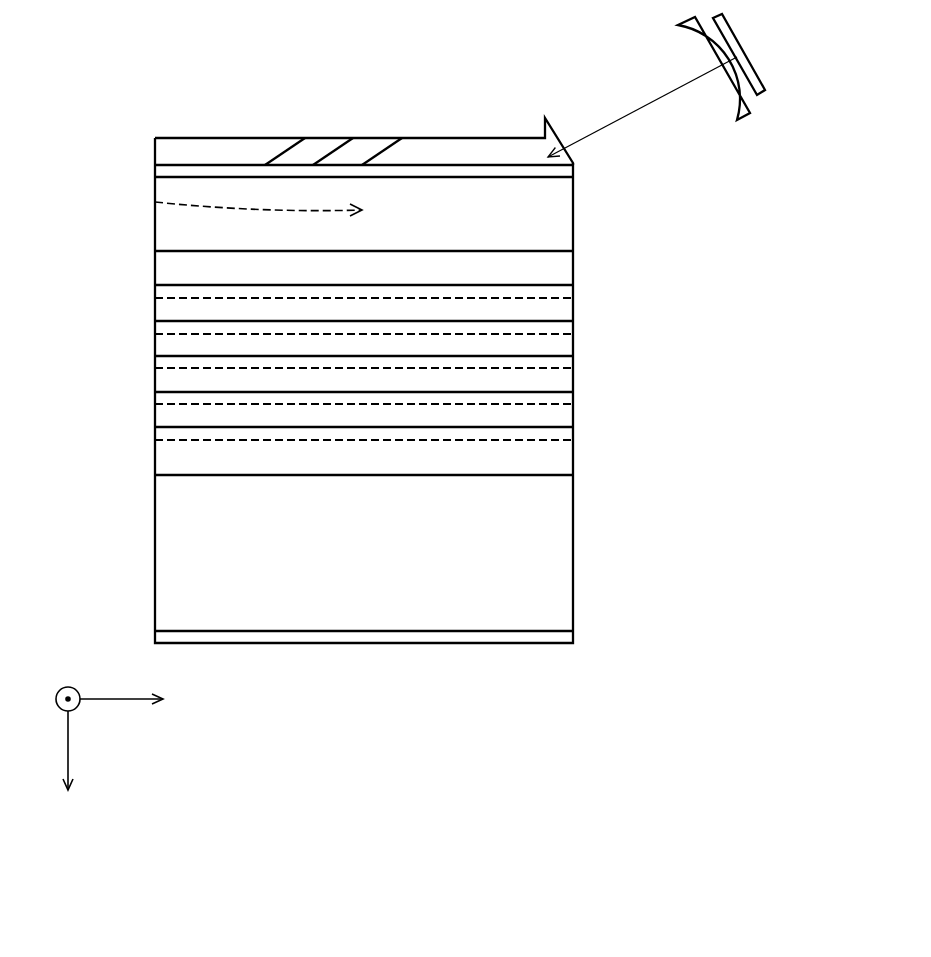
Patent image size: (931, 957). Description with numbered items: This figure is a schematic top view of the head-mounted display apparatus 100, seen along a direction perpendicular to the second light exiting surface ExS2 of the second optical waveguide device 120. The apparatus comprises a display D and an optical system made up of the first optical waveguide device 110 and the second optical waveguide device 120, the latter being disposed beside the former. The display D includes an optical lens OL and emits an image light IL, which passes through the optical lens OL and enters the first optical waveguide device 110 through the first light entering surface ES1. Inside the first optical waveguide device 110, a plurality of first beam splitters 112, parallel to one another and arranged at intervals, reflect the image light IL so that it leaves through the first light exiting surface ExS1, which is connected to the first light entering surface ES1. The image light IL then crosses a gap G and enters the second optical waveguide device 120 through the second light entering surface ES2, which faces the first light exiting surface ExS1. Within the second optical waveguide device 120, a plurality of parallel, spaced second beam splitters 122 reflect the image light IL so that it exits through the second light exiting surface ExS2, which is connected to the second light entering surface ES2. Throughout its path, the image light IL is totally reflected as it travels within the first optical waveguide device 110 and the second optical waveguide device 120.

The head-mounted display apparatus 100 is at (755, 724).
The first optical waveguide device 110 is at (207, 152).
The first beam splitters 112 is at (330, 150).
The second optical waveguide device 120 is at (187, 230).
The second beam splitters 122 is at (553, 272).
The gap G is at (155, 165).
The first light exiting surface ExS1 is at (388, 168).
The second light exiting surface ExS2 is at (155, 202).
The first light entering surface ES1 is at (553, 133).
The second light entering surface ES2 is at (480, 172).
The image light IL is at (637, 115).
The optical lens OL is at (735, 107).
The display D is at (756, 83).